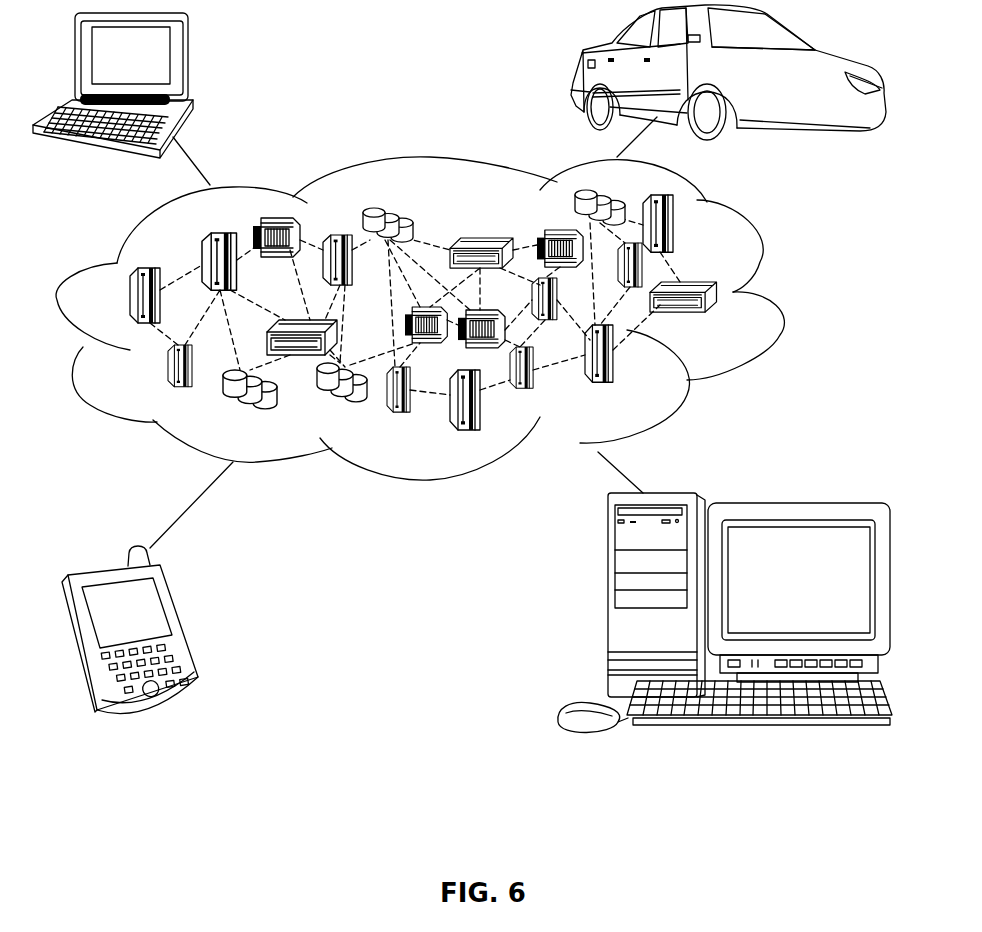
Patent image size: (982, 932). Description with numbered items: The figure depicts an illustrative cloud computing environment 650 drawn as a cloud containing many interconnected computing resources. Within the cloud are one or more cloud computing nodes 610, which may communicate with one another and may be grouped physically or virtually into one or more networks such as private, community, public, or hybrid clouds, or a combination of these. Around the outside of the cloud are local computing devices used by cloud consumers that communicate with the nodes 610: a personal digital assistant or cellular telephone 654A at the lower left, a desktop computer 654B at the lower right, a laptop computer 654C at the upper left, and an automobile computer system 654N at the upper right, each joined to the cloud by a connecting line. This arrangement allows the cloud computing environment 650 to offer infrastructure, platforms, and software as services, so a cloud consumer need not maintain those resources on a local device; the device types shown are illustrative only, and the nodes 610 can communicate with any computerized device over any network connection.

The laptop computer 654C is at (188, 60).
The automobile computer system 654N is at (577, 63).
The cloud computing environment 650 is at (762, 255).
The cloud computing nodes 610 is at (740, 318).
The personal digital assistant (PDA) or cellular telephone 654A is at (183, 627).
The desktop computer 654B is at (607, 602).